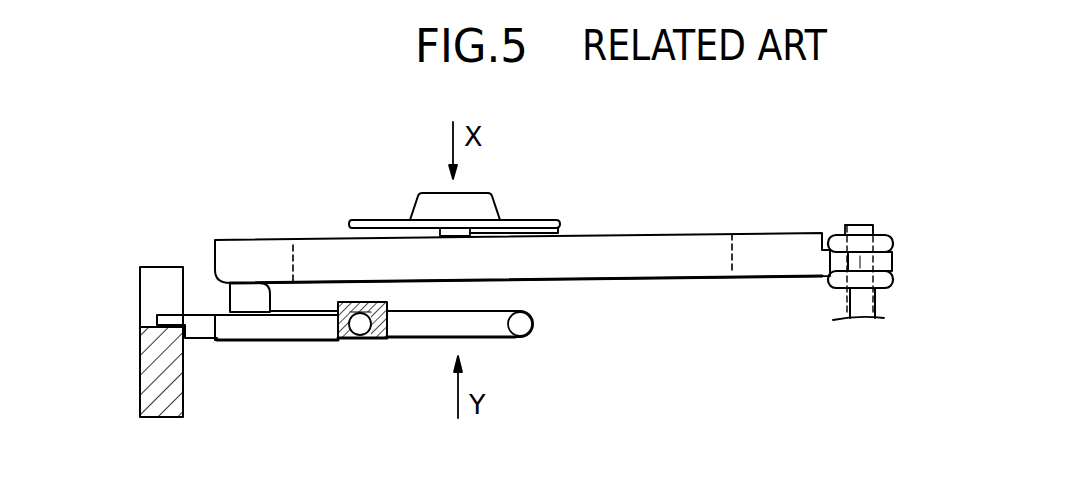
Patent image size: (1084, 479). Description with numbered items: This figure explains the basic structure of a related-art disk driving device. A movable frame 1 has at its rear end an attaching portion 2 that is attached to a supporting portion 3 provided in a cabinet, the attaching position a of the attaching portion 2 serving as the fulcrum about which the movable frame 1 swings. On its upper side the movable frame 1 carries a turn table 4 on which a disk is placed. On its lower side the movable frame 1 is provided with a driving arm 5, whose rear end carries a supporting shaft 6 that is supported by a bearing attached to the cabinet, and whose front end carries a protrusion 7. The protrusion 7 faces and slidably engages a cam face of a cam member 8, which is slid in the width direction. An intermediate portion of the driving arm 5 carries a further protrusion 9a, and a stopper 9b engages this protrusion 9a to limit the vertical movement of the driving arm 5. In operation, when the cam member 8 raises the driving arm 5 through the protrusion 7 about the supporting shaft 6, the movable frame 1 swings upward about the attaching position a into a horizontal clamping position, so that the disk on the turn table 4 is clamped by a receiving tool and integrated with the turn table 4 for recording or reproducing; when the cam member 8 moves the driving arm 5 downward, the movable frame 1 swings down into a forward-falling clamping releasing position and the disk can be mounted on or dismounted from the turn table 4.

The movable frame 1 is at (671, 233).
The attaching portion 2 is at (893, 265).
The supporting portion 3 is at (877, 236).
The turn table 4 is at (538, 219).
The driving arm 5 is at (291, 341).
The supporting shaft 6 is at (521, 332).
The protrusion 7 is at (160, 318).
The cam member 8 is at (140, 375).
The protrusion 9a is at (360, 340).
The stopper 9b is at (345, 302).
The attaching position a is at (863, 260).